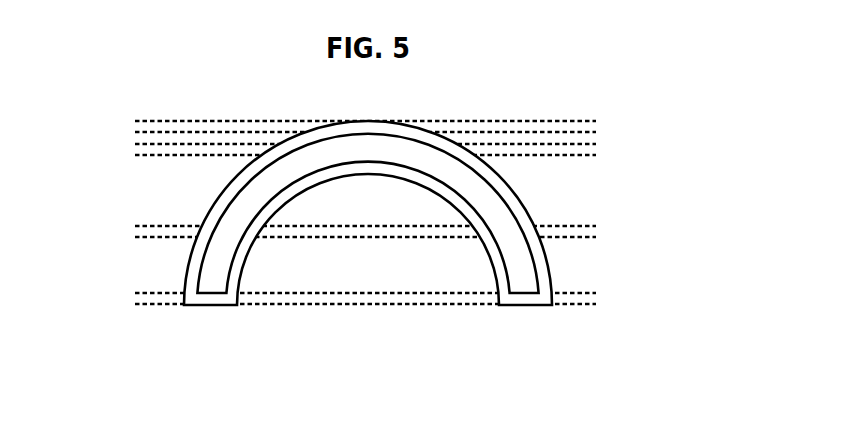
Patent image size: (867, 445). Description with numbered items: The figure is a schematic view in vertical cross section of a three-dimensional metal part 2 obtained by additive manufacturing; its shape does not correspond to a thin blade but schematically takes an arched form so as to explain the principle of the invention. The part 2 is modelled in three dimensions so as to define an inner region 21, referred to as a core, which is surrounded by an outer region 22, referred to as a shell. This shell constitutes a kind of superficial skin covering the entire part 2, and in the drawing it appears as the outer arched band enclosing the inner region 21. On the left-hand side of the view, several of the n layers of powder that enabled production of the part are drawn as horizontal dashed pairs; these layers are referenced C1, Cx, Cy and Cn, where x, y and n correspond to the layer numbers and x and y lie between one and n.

The part 2 is at (389, 243).
The inner region 21 is at (366, 147).
The outer region 22 is at (525, 298).
The layer Cn is at (133, 120).
The layer Cy is at (133, 143).
The layer Cx is at (133, 225).
The layer C1 is at (133, 292).